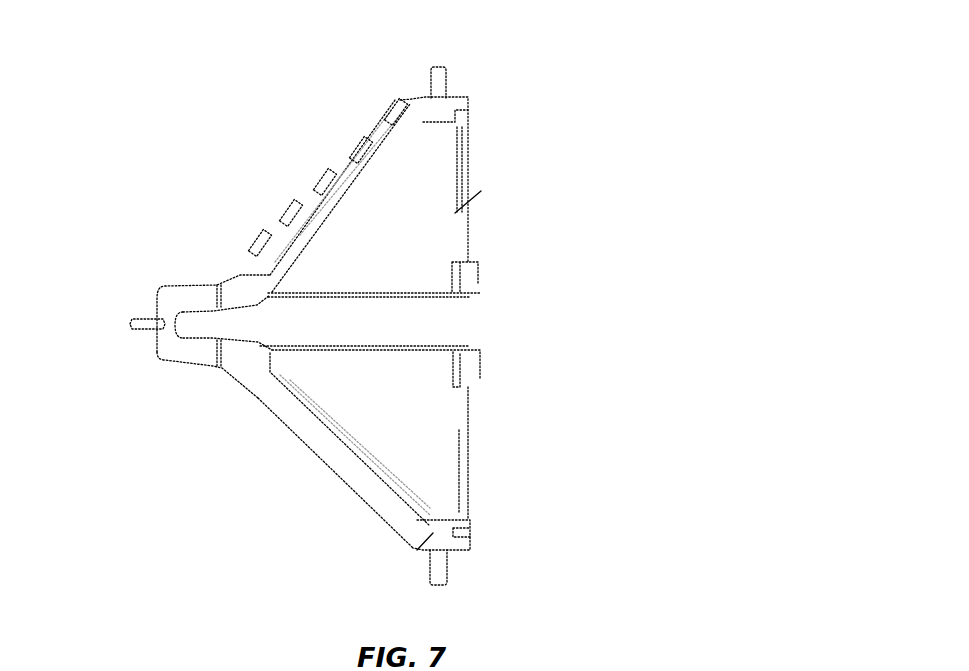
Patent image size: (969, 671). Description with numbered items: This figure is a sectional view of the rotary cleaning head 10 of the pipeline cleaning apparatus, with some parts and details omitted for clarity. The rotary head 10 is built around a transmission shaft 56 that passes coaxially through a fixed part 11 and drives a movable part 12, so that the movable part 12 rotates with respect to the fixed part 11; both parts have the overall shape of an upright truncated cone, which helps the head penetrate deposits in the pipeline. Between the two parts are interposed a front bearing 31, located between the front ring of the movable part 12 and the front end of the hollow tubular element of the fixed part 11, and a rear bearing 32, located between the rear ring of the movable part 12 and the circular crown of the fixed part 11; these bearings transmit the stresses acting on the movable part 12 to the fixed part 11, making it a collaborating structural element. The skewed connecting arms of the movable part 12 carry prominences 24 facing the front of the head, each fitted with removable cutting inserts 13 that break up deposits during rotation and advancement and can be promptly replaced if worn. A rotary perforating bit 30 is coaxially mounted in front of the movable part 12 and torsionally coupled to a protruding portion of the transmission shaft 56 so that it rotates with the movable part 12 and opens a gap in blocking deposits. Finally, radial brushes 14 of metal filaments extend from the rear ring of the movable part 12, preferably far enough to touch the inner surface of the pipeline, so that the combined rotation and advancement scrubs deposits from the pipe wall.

The rotary cleaning head 10 is at (205, 82).
The fixed part 11 is at (395, 452).
The movable part 12 is at (433, 535).
The removable cutting inserts 13 is at (262, 233).
The radial brushes 14 is at (445, 78).
The prominences 24 is at (392, 525).
The rotary perforating bit 30 is at (157, 331).
The front bearing 31 is at (270, 292).
The rear bearing 32 is at (470, 110).
The transmission shaft 56 is at (383, 323).